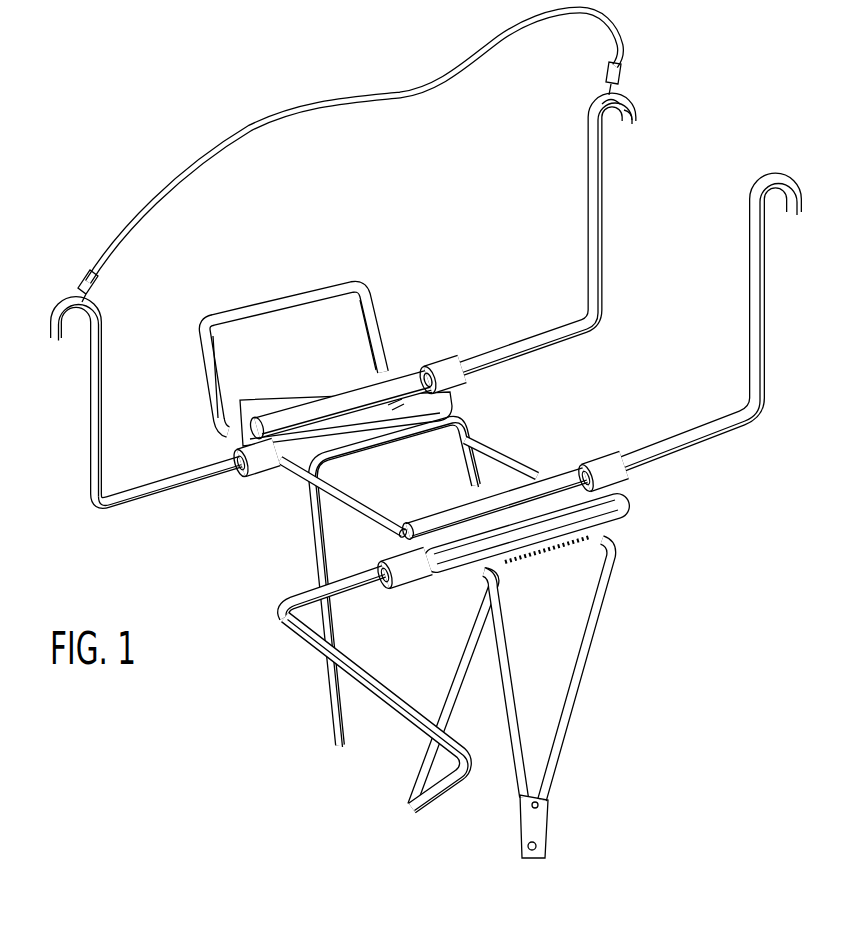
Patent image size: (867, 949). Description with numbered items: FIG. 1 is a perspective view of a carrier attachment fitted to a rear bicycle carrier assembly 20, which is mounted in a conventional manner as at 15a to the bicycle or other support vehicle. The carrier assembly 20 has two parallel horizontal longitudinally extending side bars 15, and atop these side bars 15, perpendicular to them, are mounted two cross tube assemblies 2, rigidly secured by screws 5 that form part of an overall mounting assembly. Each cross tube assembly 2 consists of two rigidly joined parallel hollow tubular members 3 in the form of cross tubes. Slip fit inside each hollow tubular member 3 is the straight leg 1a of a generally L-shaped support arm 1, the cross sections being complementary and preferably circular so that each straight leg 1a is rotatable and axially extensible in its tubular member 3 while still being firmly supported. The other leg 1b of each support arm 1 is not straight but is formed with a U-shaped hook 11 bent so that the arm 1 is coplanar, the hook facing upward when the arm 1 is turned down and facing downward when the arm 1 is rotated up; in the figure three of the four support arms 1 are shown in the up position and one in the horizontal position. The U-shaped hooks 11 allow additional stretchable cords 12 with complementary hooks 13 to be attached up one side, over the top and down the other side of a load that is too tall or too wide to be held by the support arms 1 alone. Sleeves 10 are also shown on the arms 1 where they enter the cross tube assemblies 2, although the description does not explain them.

The support arm 1 is at (431, 455).
The straight leg 1a is at (185, 470).
The other leg 1b is at (102, 372).
The cross tube assembly 2 is at (403, 376).
The hollow tubular member 3 is at (452, 404).
The screw 5 is at (392, 405).
The sleeve 10 is at (260, 478).
The U-shaped hook 11 is at (638, 114).
The stretchable cord 12 is at (290, 107).
The complementary hook 13 is at (625, 98).
The side bar 15 is at (310, 523).
The mounting connection 15a is at (522, 848).
The carrier assembly 20 is at (352, 286).